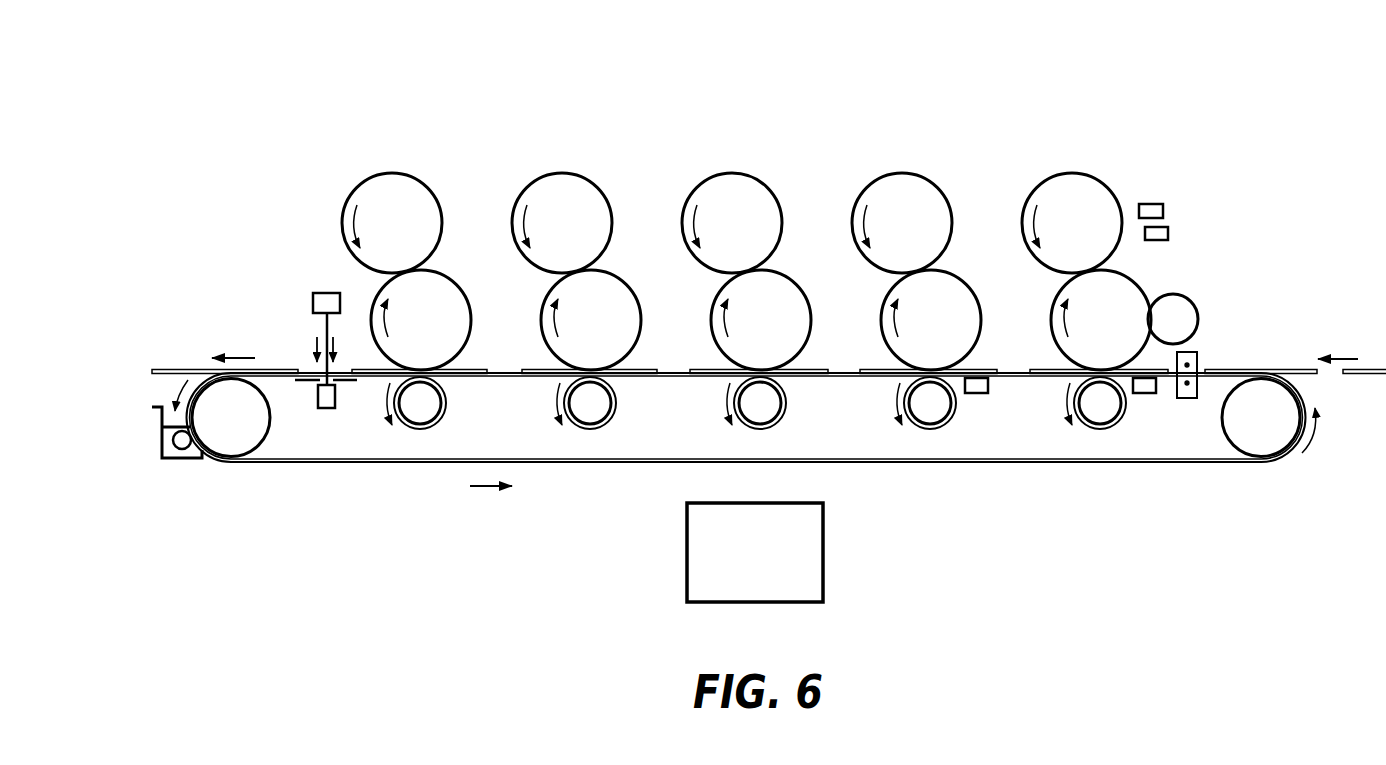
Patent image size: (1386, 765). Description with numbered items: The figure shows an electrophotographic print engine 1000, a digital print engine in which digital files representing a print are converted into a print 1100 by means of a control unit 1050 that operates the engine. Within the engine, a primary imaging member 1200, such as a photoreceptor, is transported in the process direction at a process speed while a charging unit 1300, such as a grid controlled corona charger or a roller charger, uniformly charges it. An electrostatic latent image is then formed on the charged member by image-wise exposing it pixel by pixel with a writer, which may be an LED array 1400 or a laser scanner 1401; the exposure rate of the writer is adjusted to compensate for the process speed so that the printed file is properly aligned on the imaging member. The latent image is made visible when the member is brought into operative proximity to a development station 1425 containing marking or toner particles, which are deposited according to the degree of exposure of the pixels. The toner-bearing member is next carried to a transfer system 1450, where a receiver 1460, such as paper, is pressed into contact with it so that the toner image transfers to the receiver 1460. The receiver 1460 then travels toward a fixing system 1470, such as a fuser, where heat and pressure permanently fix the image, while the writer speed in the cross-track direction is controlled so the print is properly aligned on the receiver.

The electrophotographic print engine 1000 is at (466, 124).
The print 1100 is at (176, 369).
The primary imaging member 1200 is at (1121, 272).
The charging unit 1300 is at (1163, 204).
The LED array 1400 is at (1168, 230).
The laser scanner 1401 is at (1156, 233).
The development station 1425 is at (1195, 300).
The transfer system 1450 is at (1095, 418).
The receiver 1460 is at (1043, 368).
The fixing system 1470 is at (229, 356).
The control unit 1050 is at (823, 567).